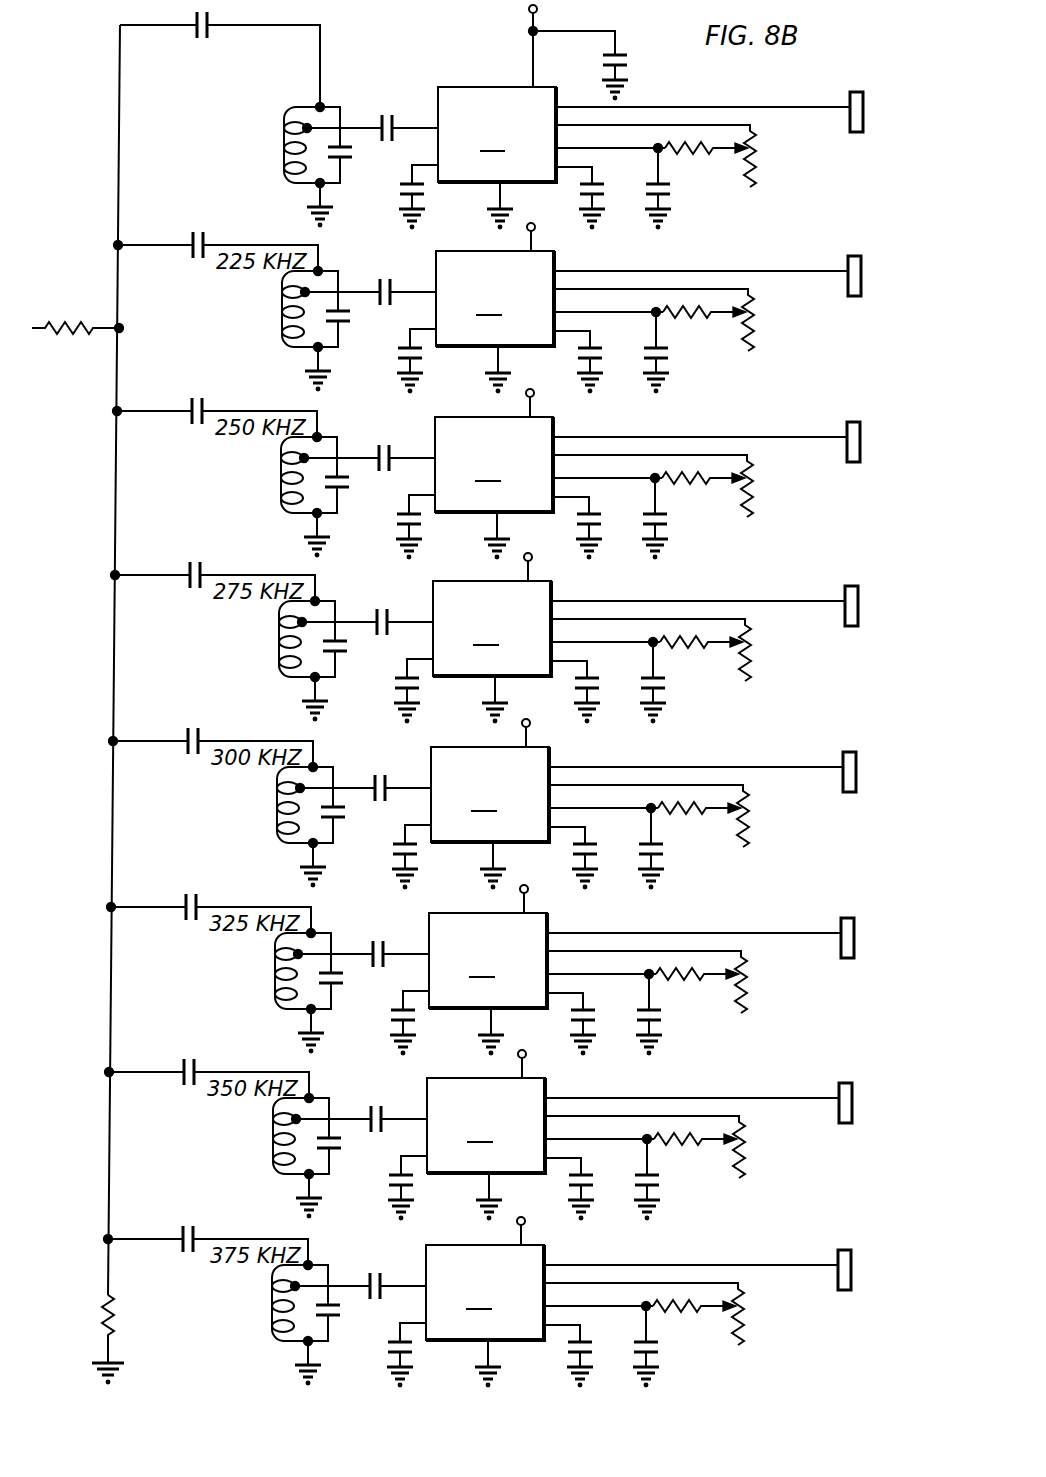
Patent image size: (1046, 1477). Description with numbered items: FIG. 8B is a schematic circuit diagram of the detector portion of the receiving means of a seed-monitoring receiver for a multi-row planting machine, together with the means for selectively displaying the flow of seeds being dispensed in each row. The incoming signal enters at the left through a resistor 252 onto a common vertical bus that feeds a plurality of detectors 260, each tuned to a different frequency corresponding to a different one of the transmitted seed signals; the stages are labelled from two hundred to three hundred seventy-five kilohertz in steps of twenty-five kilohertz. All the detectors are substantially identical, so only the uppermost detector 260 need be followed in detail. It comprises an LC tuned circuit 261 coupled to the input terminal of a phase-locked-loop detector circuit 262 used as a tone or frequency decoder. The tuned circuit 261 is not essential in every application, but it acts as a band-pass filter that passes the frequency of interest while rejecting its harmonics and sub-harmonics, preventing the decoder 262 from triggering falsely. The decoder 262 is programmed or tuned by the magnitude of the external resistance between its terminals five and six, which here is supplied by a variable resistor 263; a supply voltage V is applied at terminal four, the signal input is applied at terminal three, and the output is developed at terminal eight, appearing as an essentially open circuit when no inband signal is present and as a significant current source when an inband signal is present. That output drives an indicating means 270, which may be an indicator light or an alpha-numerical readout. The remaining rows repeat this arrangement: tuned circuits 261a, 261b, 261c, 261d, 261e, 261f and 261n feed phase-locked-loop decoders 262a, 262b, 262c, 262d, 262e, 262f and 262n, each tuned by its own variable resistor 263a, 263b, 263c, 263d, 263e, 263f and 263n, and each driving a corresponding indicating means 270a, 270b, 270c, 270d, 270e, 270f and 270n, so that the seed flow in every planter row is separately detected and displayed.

The input resistor 252 is at (35, 316).
The detector 260 is at (410, 88).
The LC tuned circuit 261 is at (268, 143).
The LC tuned circuit 261a is at (260, 329).
The LC tuned circuit 261b is at (258, 495).
The LC tuned circuit 261c is at (255, 659).
The LC tuned circuit 261d is at (254, 825).
The LC tuned circuit 261e is at (250, 991).
The LC tuned circuit 261f is at (249, 1156).
The LC tuned circuit 261n is at (252, 1323).
The phase-locked-loop detector circuit 262 is at (533, 117).
The phase-locked-loop detector circuit 262a is at (495, 295).
The phase-locked-loop detector circuit 262b is at (494, 461).
The phase-locked-loop detector circuit 262c is at (492, 625).
The phase-locked-loop detector circuit 262d is at (490, 791).
The phase-locked-loop detector circuit 262e is at (488, 957).
The phase-locked-loop detector circuit 262f is at (486, 1122).
The phase-locked-loop detector circuit 262n is at (485, 1289).
The variable resistor 263 is at (726, 160).
The variable resistor 263a is at (654, 341).
The variable resistor 263b is at (653, 506).
The variable resistor 263c is at (651, 671).
The variable resistor 263d is at (653, 838).
The variable resistor 263e is at (647, 1002).
The variable resistor 263f is at (647, 1176).
The variable resistor 263n is at (655, 1338).
The indicating means 270 is at (864, 122).
The indicating means 270a is at (745, 293).
The indicating means 270b is at (749, 452).
The indicating means 270c is at (744, 623).
The indicating means 270d is at (745, 788).
The indicating means 270e is at (746, 938).
The indicating means 270f is at (742, 1114).
The indicating means 270n is at (740, 1283).